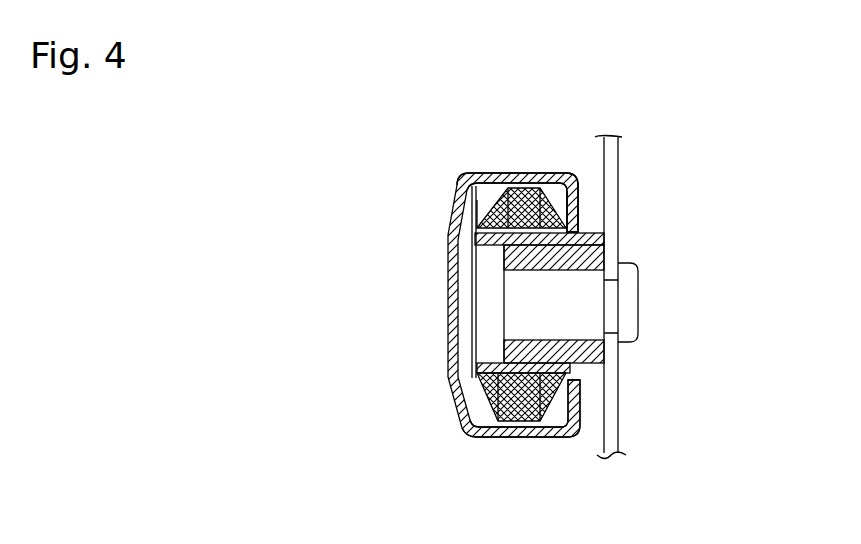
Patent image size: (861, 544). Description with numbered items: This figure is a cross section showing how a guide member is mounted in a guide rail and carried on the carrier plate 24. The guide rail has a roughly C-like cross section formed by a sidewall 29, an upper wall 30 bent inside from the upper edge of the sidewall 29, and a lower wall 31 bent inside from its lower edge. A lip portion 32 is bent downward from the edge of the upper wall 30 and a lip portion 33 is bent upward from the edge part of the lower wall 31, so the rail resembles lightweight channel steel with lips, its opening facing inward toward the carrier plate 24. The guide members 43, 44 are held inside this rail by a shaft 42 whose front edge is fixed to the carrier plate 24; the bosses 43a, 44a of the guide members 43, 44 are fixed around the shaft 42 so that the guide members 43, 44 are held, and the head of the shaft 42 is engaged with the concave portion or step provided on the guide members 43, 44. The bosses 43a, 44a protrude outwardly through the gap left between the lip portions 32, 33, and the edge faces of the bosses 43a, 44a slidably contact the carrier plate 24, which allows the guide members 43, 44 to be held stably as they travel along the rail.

The carrier plate 24 is at (613, 198).
The sidewall 29 is at (448, 328).
The upper wall 30 is at (507, 175).
The lower wall 31 is at (527, 440).
The lip portion 32 is at (577, 180).
The lip portion 33 is at (580, 403).
The shaft 42 is at (490, 283).
The front guide member 43 is at (464, 252).
The rear guide member 44 is at (483, 196).
The boss 43a is at (640, 297).
The boss 44a is at (590, 238).